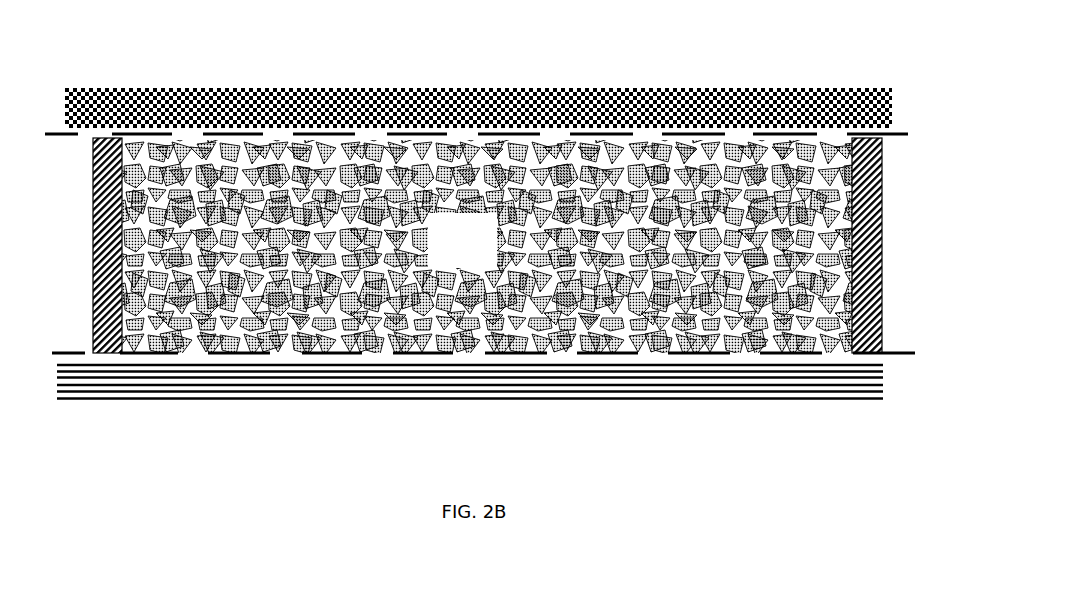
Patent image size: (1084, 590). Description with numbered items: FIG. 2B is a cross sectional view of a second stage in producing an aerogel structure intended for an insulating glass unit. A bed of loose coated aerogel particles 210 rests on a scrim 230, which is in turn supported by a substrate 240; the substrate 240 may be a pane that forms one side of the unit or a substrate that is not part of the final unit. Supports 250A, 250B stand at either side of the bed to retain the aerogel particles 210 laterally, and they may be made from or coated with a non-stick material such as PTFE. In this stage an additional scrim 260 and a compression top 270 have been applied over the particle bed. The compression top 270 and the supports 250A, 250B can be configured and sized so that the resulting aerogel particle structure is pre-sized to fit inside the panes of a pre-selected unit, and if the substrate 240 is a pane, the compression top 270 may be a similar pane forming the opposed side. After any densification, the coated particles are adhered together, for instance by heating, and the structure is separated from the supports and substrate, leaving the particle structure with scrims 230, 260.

The coated aerogel particles 210 is at (479, 248).
The scrim 230 is at (915, 352).
The substrate 240 is at (199, 378).
The support 250A is at (93, 180).
The support 250B is at (882, 272).
The additional scrim 260 is at (900, 134).
The compression top 270 is at (750, 103).